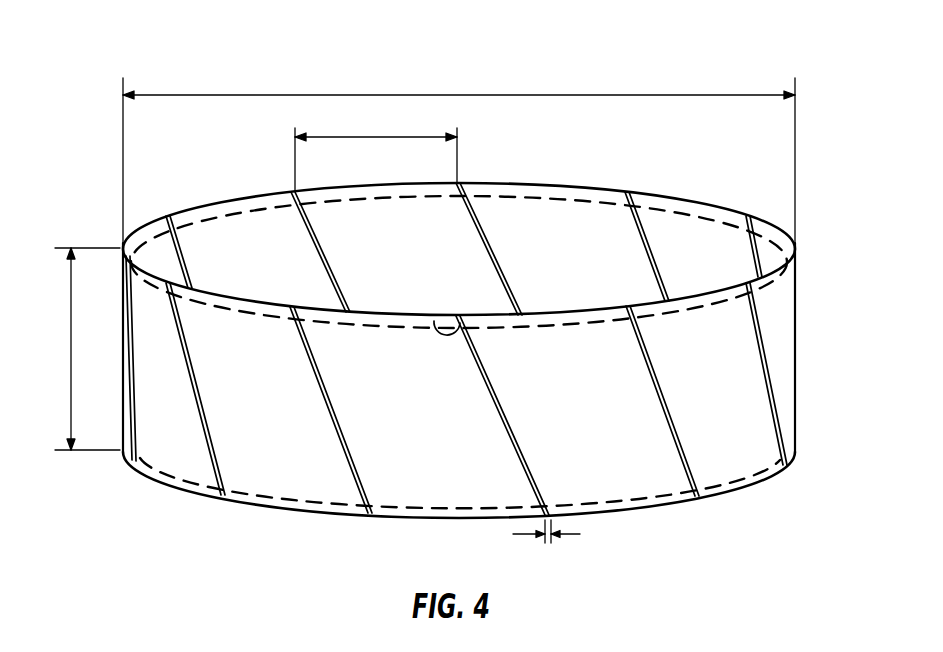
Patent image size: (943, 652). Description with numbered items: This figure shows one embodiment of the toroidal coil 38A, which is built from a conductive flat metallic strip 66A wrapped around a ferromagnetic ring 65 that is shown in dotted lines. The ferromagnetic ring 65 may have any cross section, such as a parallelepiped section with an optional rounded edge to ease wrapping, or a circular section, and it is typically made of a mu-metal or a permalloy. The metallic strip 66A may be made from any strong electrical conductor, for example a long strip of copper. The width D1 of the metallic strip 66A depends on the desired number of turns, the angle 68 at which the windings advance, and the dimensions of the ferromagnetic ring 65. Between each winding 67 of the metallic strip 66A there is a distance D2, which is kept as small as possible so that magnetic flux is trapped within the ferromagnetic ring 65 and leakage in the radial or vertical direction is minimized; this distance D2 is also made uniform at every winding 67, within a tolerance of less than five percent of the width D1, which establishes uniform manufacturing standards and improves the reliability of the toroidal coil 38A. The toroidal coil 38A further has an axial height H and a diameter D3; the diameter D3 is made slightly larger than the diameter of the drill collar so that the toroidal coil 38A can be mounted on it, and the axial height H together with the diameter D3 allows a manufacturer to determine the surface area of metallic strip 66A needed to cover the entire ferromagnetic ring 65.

The toroidal coil 38A is at (611, 62).
The ferromagnetic ring 65 is at (690, 212).
The conductive flat metallic strip 66A is at (627, 483).
The winding 67 is at (358, 459).
The angle of the advancing windings 68 is at (435, 318).
The width of the metallic strip D1 is at (387, 135).
The distance between each winding D2 is at (563, 534).
The diameter of the toroidal coil D3 is at (498, 94).
The axial height of the toroidal coil H is at (70, 345).